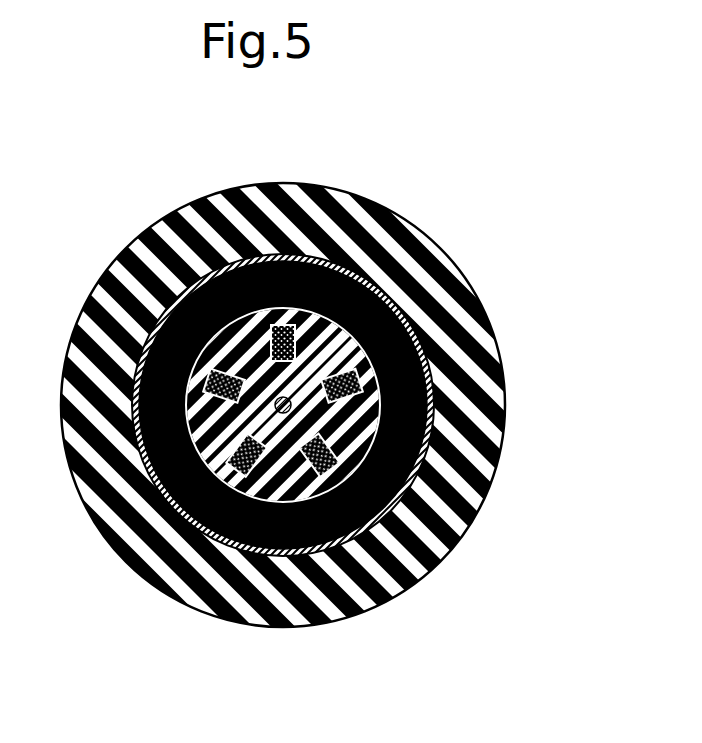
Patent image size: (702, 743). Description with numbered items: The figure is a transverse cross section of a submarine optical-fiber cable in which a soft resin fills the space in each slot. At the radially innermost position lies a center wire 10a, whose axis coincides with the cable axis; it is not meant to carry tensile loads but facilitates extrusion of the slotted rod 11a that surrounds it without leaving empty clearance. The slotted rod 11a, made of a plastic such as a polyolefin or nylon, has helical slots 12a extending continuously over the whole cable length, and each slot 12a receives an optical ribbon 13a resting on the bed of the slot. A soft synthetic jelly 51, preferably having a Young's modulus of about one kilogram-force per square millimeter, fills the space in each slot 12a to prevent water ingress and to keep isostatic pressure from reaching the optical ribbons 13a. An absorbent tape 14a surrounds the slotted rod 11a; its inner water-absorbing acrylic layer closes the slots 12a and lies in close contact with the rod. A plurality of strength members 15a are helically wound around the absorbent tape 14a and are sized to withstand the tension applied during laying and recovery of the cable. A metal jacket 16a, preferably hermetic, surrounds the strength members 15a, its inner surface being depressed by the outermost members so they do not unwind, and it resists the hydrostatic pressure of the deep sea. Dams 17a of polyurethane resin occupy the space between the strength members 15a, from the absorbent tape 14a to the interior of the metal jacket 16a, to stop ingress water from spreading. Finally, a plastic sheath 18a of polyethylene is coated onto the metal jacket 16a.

The center wire 10a is at (378, 292).
The slotted rod 11a is at (400, 331).
The helical slot 12a is at (456, 381).
The optical ribbon 13a is at (420, 433).
The soft synthetic jelly 51 is at (412, 444).
The absorbent tape 14a is at (400, 466).
The strength members 15a is at (400, 477).
The metal jacket 16a is at (440, 537).
The dam 17a is at (362, 556).
The plastic sheath 18a is at (331, 620).